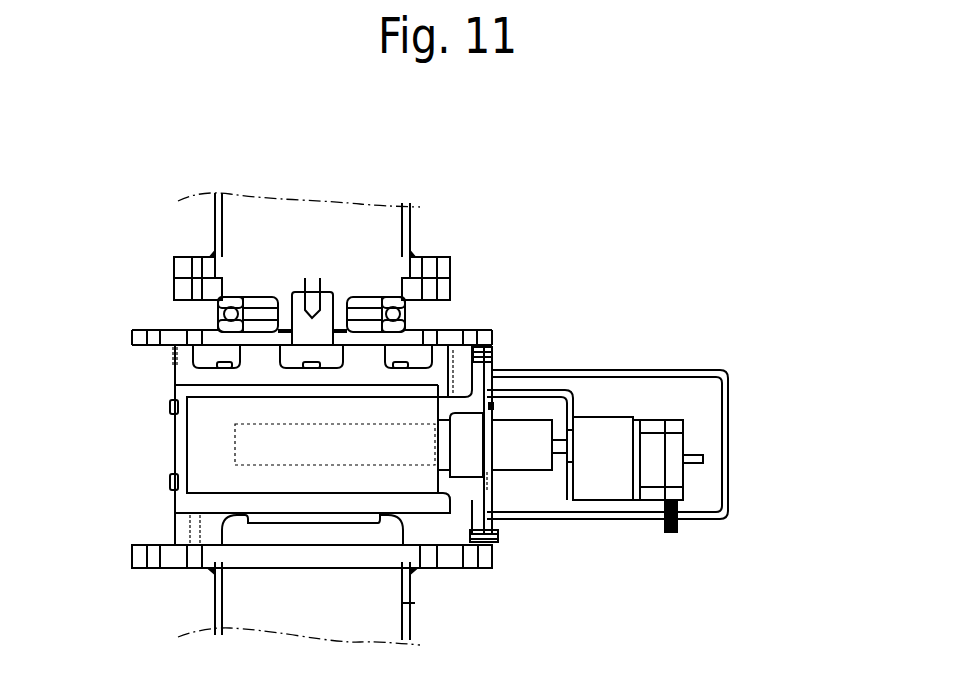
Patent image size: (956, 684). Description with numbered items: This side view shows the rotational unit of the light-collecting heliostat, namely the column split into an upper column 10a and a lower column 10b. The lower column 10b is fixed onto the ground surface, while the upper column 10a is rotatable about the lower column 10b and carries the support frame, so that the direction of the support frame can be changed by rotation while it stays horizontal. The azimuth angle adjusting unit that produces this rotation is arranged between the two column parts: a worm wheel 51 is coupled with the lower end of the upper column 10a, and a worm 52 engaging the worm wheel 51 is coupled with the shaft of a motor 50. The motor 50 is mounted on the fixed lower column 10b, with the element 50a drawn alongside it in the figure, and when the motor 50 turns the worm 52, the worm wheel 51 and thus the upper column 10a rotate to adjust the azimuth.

The upper column 10a is at (387, 238).
The lower column 10b is at (402, 603).
The worm wheel 51 is at (203, 425).
The worm 52 is at (413, 437).
The motor 50 is at (610, 412).
The motor bracket 50a is at (725, 428).